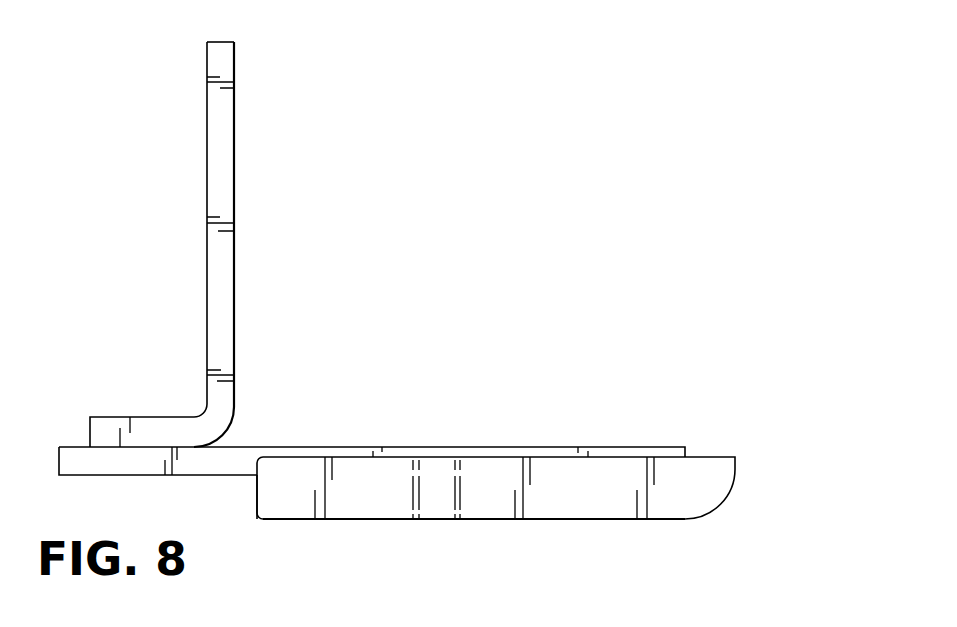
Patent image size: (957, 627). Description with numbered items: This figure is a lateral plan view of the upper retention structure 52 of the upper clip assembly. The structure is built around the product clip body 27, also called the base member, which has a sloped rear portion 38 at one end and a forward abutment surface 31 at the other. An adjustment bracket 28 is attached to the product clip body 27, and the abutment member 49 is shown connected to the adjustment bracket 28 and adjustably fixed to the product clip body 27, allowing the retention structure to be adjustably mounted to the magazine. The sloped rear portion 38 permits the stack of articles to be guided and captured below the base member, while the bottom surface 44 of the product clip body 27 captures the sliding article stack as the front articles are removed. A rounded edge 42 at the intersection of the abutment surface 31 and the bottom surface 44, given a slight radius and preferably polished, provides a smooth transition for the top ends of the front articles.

The article retention structure 52 is at (263, 97).
The adjustment bracket 28 is at (220, 187).
The abutment member 49 is at (243, 458).
The product clip body 27 is at (593, 497).
The sloped rear portion 38 is at (712, 508).
The bottom surface 44 is at (493, 519).
The forward abutment surface 31 is at (257, 483).
The rounded edge 42 is at (259, 519).